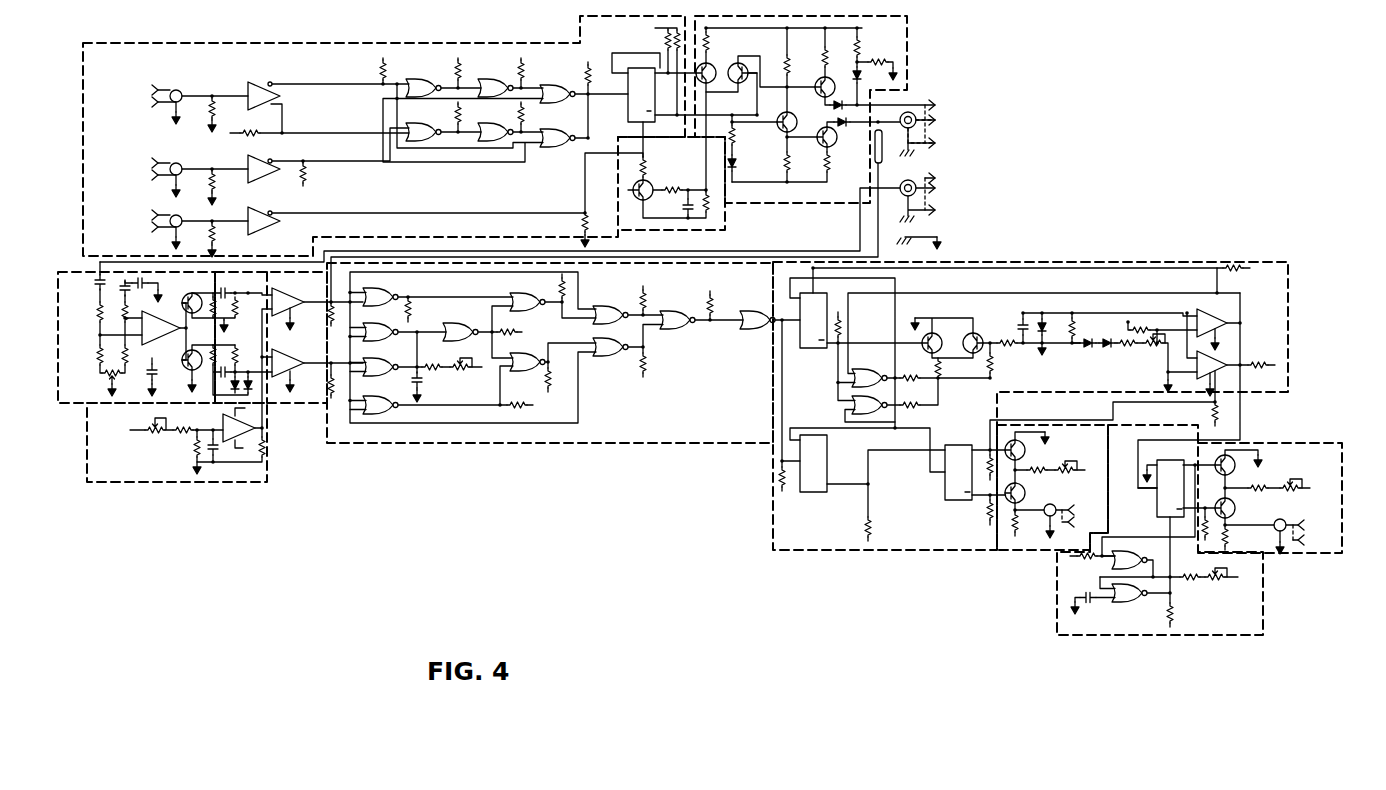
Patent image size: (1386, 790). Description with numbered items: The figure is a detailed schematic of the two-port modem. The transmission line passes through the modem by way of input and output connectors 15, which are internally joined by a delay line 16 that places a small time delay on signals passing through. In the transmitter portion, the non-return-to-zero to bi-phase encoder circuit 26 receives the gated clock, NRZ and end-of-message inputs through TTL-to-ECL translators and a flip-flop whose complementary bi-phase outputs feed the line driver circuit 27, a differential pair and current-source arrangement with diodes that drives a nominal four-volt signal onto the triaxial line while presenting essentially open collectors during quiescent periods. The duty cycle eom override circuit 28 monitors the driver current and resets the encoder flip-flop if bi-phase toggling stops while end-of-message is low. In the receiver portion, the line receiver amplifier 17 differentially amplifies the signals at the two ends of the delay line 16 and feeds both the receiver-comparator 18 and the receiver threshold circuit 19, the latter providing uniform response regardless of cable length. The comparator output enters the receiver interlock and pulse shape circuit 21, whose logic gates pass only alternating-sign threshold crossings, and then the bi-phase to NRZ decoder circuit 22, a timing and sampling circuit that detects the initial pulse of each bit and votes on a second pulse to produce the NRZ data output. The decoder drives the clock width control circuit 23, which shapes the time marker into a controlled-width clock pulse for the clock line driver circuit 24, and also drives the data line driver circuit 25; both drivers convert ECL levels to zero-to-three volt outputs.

The input and output connectors 15 is at (922, 117).
The delay line 16 is at (884, 148).
The line receiver amplifier 17 is at (62, 404).
The receiver-comparator 18 is at (316, 406).
The receiver threshold circuit 19 is at (267, 470).
The receiver interlock and pulse shape circuit 21 is at (563, 366).
The bi-phase to NRZ decoder circuit 22 is at (930, 553).
The clock width control circuit 23 is at (1262, 615).
The clock line driver circuit 24 is at (1298, 443).
The data line driver circuit 25 is at (1033, 552).
The non-return-to-zero to bi-phase encoder circuit 26 is at (410, 222).
The line driver circuit 27 is at (790, 203).
The duty cycle eom override circuit 28 is at (722, 227).